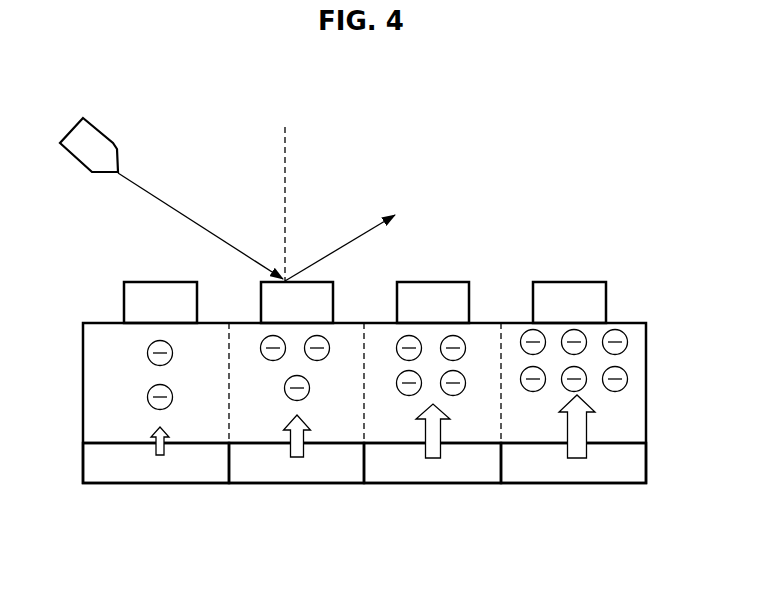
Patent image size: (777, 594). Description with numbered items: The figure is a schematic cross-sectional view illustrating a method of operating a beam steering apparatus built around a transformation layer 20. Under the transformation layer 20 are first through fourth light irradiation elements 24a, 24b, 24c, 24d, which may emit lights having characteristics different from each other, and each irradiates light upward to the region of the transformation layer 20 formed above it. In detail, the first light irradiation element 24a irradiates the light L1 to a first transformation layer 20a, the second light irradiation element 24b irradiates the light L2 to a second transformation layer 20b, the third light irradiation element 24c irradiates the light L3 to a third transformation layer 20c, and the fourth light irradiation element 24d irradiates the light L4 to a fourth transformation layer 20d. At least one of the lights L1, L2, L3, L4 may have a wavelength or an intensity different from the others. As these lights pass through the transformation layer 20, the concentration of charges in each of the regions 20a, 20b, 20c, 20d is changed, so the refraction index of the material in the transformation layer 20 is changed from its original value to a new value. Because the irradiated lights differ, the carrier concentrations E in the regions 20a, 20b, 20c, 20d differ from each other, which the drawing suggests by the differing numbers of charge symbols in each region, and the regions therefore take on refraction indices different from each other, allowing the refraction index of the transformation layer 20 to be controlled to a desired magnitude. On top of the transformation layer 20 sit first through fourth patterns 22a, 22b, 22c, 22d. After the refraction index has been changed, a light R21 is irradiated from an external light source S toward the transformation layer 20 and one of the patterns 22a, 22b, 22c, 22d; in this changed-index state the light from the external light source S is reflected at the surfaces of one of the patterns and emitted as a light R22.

The external light source S is at (100, 141).
The light R21 is at (200, 225).
The light R22 is at (340, 245).
The transformation layer 20 is at (662, 392).
The first transformation layer 20a is at (187, 420).
The second transformation layer 20b is at (323, 419).
The third transformation layer 20c is at (460, 419).
The fourth transformation layer 20d is at (613, 418).
The first pattern 22a is at (128, 293).
The second pattern 22b is at (328, 291).
The third pattern 22c is at (446, 285).
The fourth pattern 22d is at (569, 290).
The first light irradiation element 24a is at (160, 475).
The second light irradiation element 24b is at (297, 475).
The third light irradiation element 24c is at (433, 475).
The fourth light irradiation element 24d is at (568, 473).
The carrier concentrations E is at (147, 397).
The light L1 is at (155, 452).
The light L2 is at (290, 455).
The light L3 is at (428, 456).
The light L4 is at (572, 452).